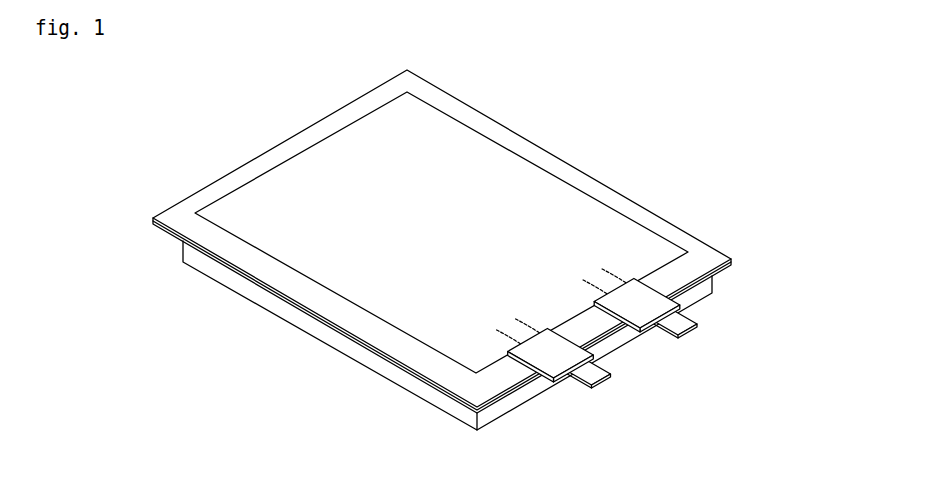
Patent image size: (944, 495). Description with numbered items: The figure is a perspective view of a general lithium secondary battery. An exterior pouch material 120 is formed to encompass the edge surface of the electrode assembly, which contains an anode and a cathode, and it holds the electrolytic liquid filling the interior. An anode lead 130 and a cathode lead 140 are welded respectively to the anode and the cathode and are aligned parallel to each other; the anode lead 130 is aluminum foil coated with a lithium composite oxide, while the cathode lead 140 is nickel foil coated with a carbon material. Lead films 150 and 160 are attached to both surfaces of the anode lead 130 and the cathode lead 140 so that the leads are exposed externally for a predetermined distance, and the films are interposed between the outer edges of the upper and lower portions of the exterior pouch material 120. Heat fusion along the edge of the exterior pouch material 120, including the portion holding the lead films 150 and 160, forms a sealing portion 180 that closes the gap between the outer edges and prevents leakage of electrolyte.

The exterior pouch material 120 is at (410, 333).
The sealing portion 180 is at (330, 308).
The anode lead 130 is at (682, 327).
The cathode lead 140 is at (600, 376).
The lead film 150 is at (680, 290).
The lead film 160 is at (560, 376).